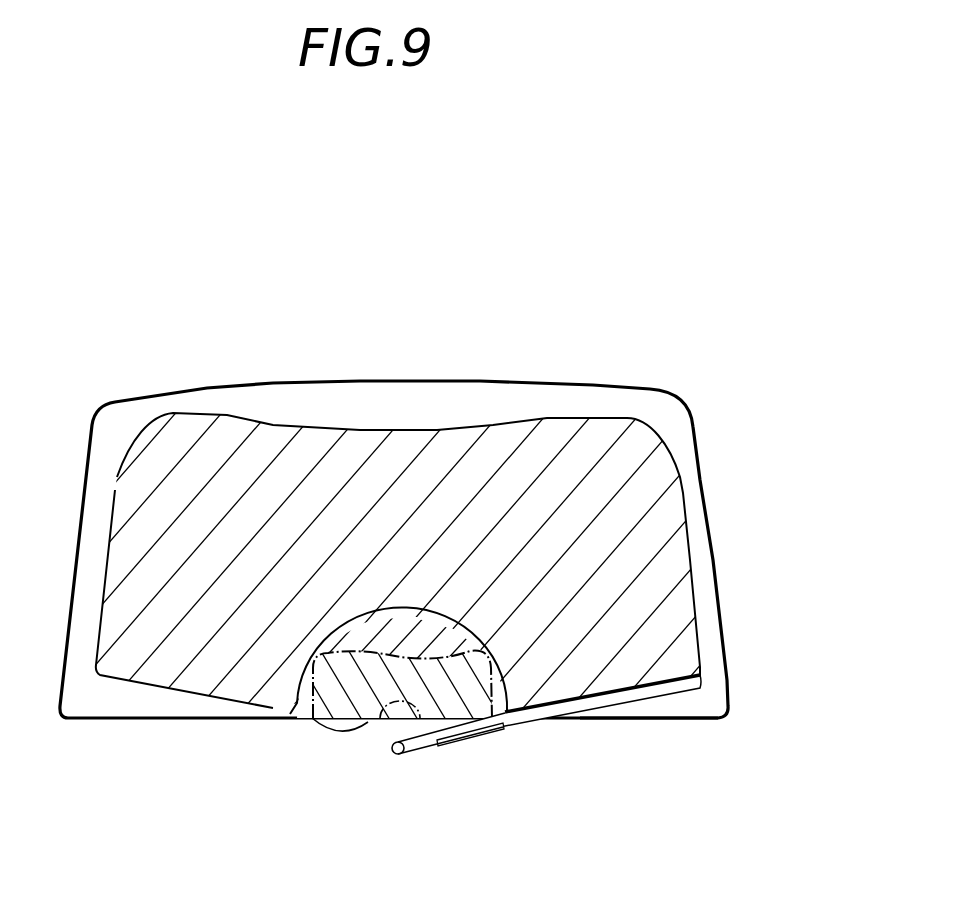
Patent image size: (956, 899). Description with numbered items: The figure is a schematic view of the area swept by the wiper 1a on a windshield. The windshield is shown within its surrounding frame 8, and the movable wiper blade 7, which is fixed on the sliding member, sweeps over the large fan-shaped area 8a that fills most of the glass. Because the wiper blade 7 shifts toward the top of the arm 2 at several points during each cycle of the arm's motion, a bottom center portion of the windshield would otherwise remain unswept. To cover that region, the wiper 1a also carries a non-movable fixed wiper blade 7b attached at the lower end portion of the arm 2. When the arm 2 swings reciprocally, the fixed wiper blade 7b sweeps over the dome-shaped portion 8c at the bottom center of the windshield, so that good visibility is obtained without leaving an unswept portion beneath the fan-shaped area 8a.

The window frame 8 is at (469, 399).
The fan-shaped area 8a is at (677, 552).
The portion of the windshield 8c is at (340, 697).
The wiper blade 7 is at (625, 700).
The fixed wiper blade 7b is at (477, 735).
The wiper arm 2 is at (418, 748).
The wiper 1a is at (688, 748).